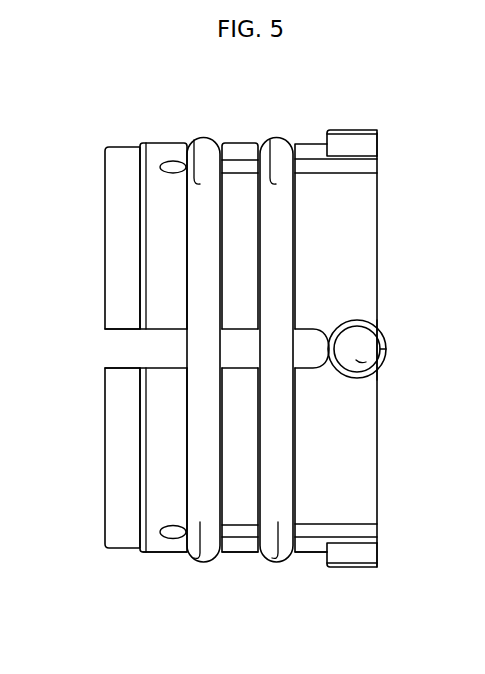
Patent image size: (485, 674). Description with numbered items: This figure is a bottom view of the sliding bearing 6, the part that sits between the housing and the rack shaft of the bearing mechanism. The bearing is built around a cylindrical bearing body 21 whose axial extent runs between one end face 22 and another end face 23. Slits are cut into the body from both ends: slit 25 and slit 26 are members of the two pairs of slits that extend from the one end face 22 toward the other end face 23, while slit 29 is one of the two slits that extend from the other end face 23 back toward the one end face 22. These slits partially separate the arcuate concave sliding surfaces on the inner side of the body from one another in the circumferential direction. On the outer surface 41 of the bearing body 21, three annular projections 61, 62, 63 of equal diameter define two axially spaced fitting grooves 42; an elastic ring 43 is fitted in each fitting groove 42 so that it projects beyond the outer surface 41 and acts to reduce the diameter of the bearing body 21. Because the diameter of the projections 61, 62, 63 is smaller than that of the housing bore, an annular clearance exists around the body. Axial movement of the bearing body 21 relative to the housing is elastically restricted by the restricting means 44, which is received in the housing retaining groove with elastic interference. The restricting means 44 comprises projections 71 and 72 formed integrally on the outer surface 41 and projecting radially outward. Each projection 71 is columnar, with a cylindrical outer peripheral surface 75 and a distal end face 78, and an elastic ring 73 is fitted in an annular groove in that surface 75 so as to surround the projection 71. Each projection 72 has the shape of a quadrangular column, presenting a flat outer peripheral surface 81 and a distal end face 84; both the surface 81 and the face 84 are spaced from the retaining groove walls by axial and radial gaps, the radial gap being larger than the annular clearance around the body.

The sliding bearing 6 is at (393, 124).
The bearing body 21 is at (238, 180).
The one end face 22 is at (378, 445).
The other end face 23 is at (105, 272).
The slit 25 is at (308, 162).
The slit 26 is at (238, 534).
The slit 29 is at (115, 348).
The outer surface 41 is at (128, 469).
The fitting groove 42 is at (194, 142).
The elastic ring 43 is at (188, 562).
The restricting means 44 is at (386, 365).
The annular projection 61 is at (307, 551).
The annular projection 62 is at (245, 554).
The annular projection 63 is at (158, 553).
The projection 71 is at (368, 340).
The projection 72 is at (348, 136).
The elastic ring 73 is at (381, 349).
The cylindrical outer peripheral surface 75 is at (358, 322).
The distal end face 78 is at (366, 362).
The flat outer peripheral surface 81 is at (370, 145).
The distal end face 84 is at (365, 127).